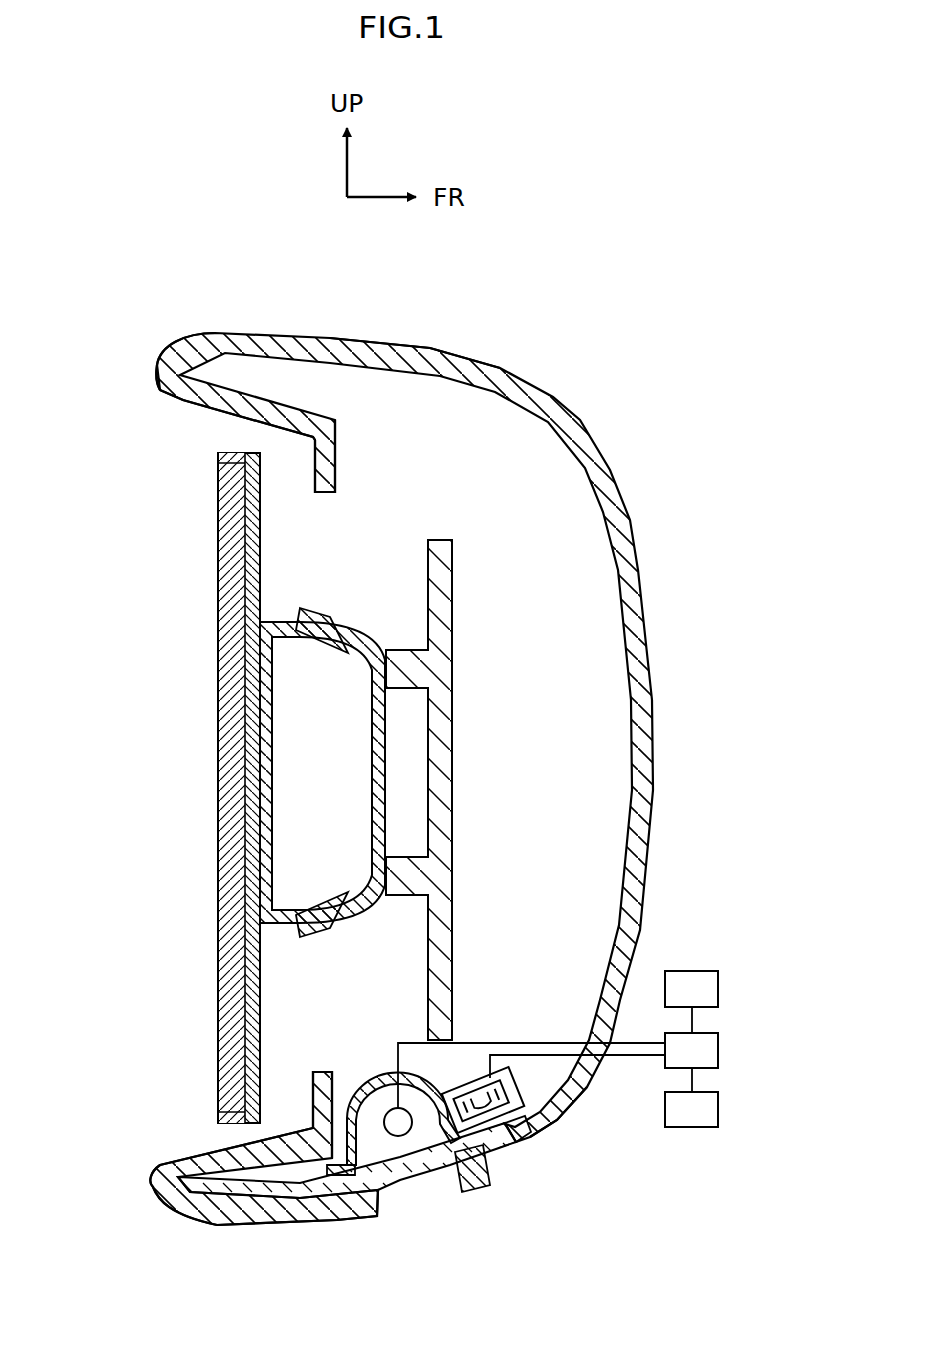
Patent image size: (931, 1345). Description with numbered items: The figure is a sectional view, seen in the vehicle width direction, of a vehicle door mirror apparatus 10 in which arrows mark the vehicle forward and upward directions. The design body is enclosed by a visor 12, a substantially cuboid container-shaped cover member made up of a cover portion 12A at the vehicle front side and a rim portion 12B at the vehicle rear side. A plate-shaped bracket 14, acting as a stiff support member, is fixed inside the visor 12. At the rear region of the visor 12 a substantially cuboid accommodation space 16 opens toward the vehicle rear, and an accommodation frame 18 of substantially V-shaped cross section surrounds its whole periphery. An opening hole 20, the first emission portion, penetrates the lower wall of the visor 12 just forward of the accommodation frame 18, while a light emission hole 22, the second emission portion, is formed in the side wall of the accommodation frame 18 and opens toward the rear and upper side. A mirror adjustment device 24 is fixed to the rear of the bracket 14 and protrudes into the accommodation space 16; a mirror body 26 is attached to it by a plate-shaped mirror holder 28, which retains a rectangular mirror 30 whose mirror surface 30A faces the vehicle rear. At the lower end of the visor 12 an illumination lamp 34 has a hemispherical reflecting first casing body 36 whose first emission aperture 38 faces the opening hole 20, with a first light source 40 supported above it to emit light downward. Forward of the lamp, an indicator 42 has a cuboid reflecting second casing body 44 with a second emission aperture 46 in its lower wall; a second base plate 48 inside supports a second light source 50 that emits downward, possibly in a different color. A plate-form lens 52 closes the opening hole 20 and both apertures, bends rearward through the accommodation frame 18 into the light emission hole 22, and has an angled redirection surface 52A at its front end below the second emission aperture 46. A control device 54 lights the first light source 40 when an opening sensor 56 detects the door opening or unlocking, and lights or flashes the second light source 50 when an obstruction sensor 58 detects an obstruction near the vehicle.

The vehicle door mirror apparatus 10 is at (102, 296).
The visor 12 is at (582, 420).
The cover portion 12A is at (401, 345).
The rim portion 12B is at (176, 345).
The bracket 14 is at (441, 540).
The accommodation space 16 is at (181, 402).
The accommodation frame 18 is at (160, 1208).
The opening hole 20 is at (378, 1216).
The light emission hole 22 is at (168, 1160).
The mirror adjustment device 24 is at (322, 606).
The mirror body 26 is at (216, 527).
The mirror holder 28 is at (261, 975).
The mirror 30 is at (218, 790).
The mirror surface 30A is at (218, 613).
The illumination lamp 34 is at (402, 1076).
The first casing body 36 is at (355, 1085).
The first emission aperture 38 is at (385, 1186).
The first light source 40 is at (406, 1111).
The indicator 42 is at (546, 1133).
The second casing body 44 is at (520, 1145).
The second emission aperture 46 is at (478, 1180).
The second base plate 48 is at (512, 1086).
The second light source 50 is at (524, 1108).
The lens 52 is at (270, 1200).
The redirection surface 52A is at (503, 1145).
The control device 54 is at (718, 1047).
The opening sensor 56 is at (718, 987).
The obstruction sensor 58 is at (718, 1106).